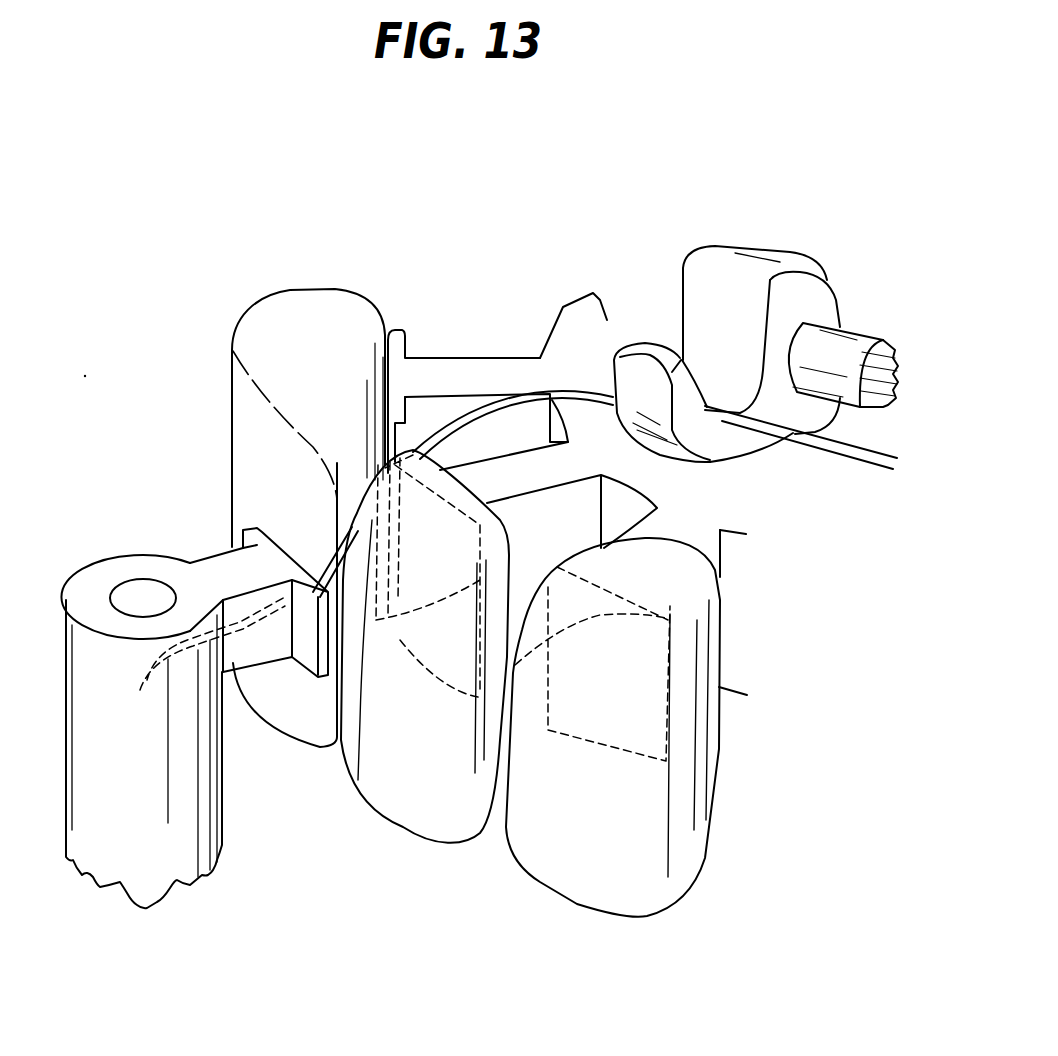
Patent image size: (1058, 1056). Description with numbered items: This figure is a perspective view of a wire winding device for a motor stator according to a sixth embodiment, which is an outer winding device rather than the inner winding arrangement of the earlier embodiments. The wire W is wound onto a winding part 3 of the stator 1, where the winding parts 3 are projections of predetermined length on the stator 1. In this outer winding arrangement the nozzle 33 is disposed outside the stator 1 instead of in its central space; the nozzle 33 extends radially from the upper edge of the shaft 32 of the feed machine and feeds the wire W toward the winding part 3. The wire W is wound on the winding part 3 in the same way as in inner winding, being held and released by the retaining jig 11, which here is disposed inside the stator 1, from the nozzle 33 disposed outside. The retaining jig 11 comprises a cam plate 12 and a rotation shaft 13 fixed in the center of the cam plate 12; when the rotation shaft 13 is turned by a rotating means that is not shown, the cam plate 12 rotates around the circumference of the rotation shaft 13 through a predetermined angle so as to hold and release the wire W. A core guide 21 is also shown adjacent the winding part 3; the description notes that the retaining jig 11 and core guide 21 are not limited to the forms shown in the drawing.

The motor stator 1 is at (541, 356).
The winding part 3 is at (433, 370).
The wire W is at (520, 385).
The retaining jig 11 is at (748, 246).
The cam plate 12 is at (814, 302).
The rotation shaft 13 is at (833, 402).
The core guide 21 is at (708, 818).
The shaft 32 is at (200, 803).
The nozzle 33 is at (225, 568).